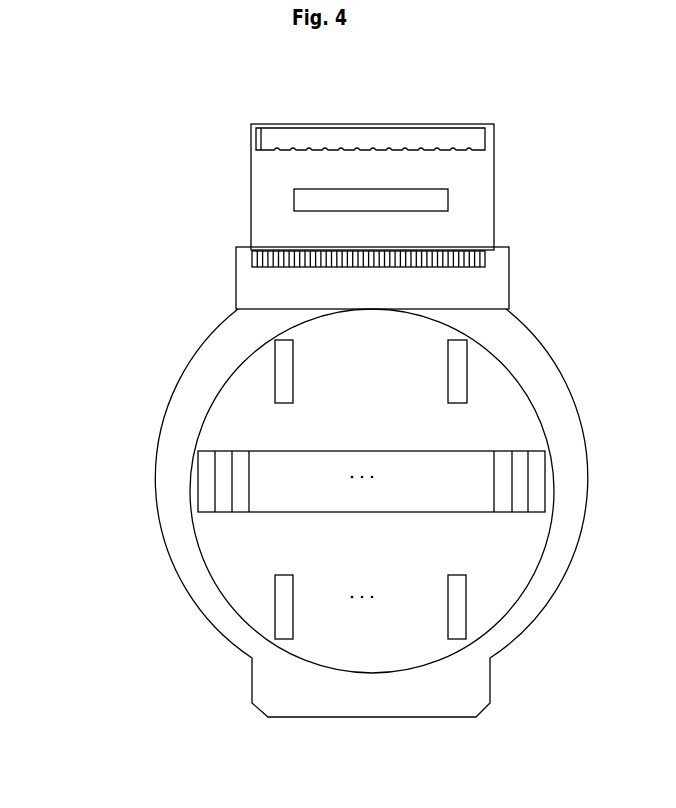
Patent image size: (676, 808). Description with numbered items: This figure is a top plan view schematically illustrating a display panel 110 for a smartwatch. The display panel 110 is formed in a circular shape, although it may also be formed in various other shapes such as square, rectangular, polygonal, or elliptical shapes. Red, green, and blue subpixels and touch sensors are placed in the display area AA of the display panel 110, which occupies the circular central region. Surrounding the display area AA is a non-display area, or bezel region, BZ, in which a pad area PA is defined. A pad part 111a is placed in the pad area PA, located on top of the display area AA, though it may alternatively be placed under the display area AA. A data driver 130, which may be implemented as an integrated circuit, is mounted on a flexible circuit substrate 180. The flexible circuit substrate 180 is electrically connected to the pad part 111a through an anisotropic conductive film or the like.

The display panel 110 is at (162, 482).
The non-display area BZ is at (207, 360).
The display area AA is at (222, 563).
The pad area PA is at (236, 300).
The pad part 111a is at (252, 260).
The flexible circuit substrate 180 is at (485, 168).
The data driver 130 is at (448, 195).